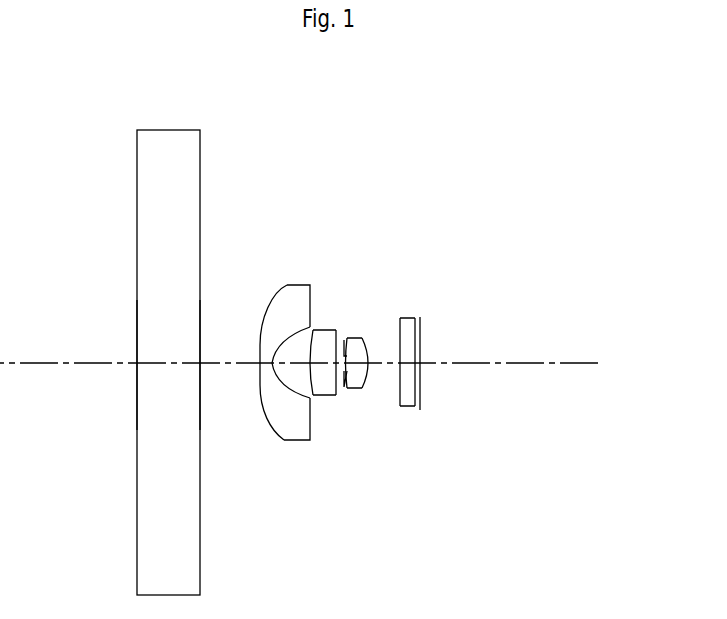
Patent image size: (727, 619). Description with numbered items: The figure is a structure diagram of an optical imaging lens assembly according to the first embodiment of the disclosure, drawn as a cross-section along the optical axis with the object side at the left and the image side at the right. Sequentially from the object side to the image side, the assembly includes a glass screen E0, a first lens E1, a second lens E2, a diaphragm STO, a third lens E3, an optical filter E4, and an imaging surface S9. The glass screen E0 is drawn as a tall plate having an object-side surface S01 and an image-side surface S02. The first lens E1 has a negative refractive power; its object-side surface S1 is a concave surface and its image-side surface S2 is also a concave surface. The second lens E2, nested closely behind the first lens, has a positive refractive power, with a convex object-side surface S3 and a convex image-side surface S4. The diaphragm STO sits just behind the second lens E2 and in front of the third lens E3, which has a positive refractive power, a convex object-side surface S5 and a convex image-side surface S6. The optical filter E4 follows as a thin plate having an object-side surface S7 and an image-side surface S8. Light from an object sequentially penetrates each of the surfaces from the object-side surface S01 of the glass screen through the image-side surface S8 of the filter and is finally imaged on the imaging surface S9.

The glass screen E0 is at (173, 126).
The object-side surface of the glass screen S01 is at (137, 365).
The image-side surface of the glass screen S02 is at (198, 367).
The first lens E1 is at (282, 391).
The second lens E2 is at (347, 391).
The diaphragm STO is at (344, 340).
The third lens E3 is at (430, 391).
The optical filter E4 is at (502, 391).
The object-side surface of the first lens S1 is at (260, 363).
The image-side surface of the first lens S2 is at (272, 363).
The object-side surface of the second lens S3 is at (308, 363).
The image-side surface of the second lens S4 is at (336, 363).
The object-side surface of the third lens S5 is at (346, 363).
The image-side surface of the third lens S6 is at (370, 363).
The object-side surface of the optical filter S7 is at (400, 363).
The image-side surface of the optical filter S8 is at (415, 363).
The imaging surface S9 is at (420, 363).